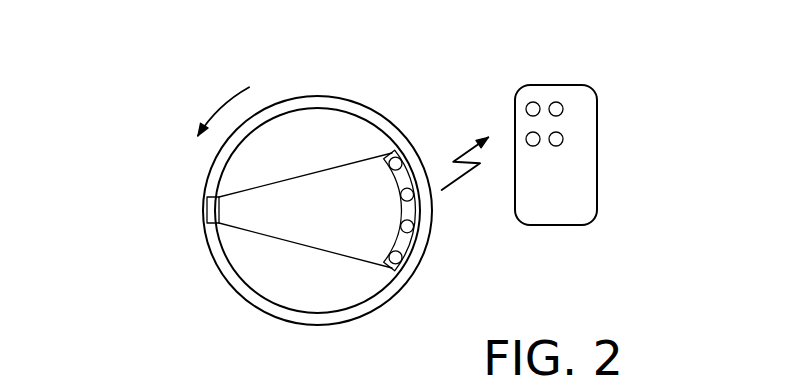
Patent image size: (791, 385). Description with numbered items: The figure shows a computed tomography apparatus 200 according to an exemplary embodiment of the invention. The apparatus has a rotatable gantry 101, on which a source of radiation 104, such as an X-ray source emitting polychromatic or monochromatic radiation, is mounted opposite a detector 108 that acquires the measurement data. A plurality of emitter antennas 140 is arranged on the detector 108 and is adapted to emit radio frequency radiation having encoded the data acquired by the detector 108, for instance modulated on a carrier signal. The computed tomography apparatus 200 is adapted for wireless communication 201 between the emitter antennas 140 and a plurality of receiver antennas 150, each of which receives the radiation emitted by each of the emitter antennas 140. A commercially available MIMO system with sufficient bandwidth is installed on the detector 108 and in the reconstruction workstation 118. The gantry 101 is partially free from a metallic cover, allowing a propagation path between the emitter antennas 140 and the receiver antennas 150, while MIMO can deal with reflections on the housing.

The computed tomography apparatus 200 is at (143, 155).
The gantry 101 is at (318, 96).
The source of radiation 104 is at (207, 205).
The detector 108 is at (402, 177).
The emitter antennas 140 is at (403, 256).
The wireless communication 201 is at (456, 152).
The reconstruction workstation 118 is at (577, 170).
The receiver antennas 150 is at (545, 152).